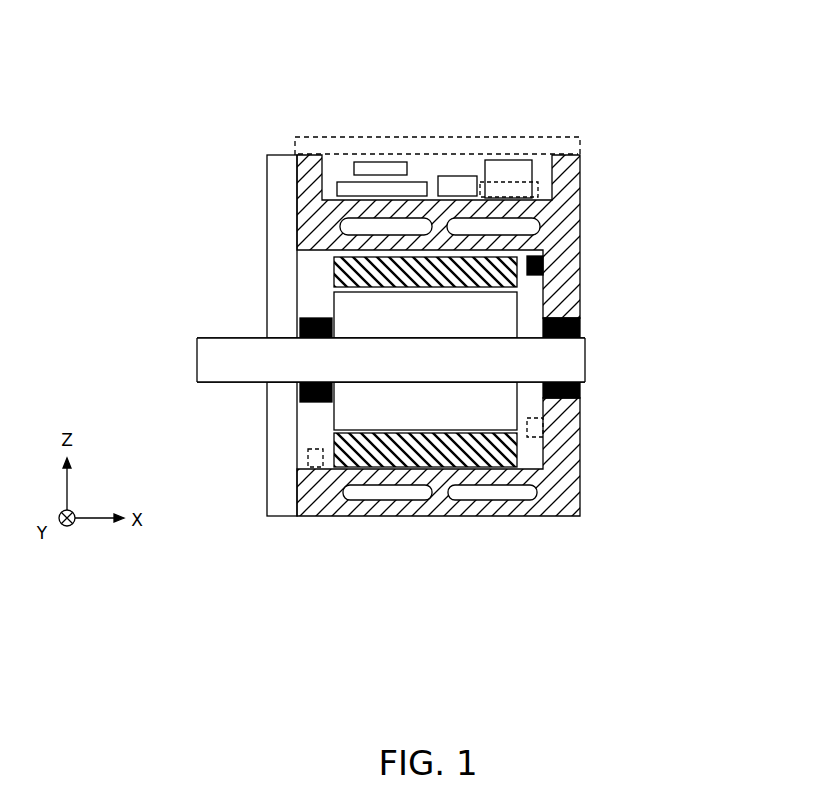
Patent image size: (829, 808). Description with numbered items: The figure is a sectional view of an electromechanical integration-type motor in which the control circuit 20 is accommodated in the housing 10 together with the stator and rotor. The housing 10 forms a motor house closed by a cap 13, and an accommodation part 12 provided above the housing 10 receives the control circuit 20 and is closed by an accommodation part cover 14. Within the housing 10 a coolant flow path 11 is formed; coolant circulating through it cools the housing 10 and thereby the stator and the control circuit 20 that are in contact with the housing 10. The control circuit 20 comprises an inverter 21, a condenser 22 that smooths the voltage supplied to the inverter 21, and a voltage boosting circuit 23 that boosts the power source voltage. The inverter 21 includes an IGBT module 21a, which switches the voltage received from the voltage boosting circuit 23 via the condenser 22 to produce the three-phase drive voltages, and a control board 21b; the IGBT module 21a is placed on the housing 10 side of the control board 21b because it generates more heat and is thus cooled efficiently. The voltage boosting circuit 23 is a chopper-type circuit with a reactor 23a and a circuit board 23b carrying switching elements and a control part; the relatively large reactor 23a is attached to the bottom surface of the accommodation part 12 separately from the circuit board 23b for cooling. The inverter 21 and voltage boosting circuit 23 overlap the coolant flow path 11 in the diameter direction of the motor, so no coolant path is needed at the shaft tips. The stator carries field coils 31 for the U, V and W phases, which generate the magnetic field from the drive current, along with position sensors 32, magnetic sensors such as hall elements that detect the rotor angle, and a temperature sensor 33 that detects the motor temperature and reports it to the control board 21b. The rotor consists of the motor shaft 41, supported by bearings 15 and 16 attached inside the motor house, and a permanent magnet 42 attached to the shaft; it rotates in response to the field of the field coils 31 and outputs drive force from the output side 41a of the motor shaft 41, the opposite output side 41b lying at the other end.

The housing 10 is at (435, 358).
The coolant flow path 11 is at (297, 228).
The accommodation part 12 is at (332, 163).
The cap 13 is at (275, 193).
The accommodation part cover 14 is at (567, 147).
The bearing 15 is at (580, 323).
The bearing 16 is at (300, 328).
The control circuit 20 is at (442, 107).
The inverter 21 is at (372, 128).
The IGBT module 21a is at (350, 182).
The control board 21b is at (380, 138).
The condenser 22 is at (463, 180).
The voltage boosting circuit 23 is at (520, 129).
The reactor 23a is at (500, 159).
The circuit board 23b is at (472, 94).
The field coils 31 is at (334, 270).
The position sensors 32 is at (543, 267).
The temperature sensor 33 is at (316, 468).
The motor shaft 41 is at (389, 388).
The output side 41a is at (197, 363).
The opposite output side 41b is at (585, 362).
The magnet 42 is at (334, 307).